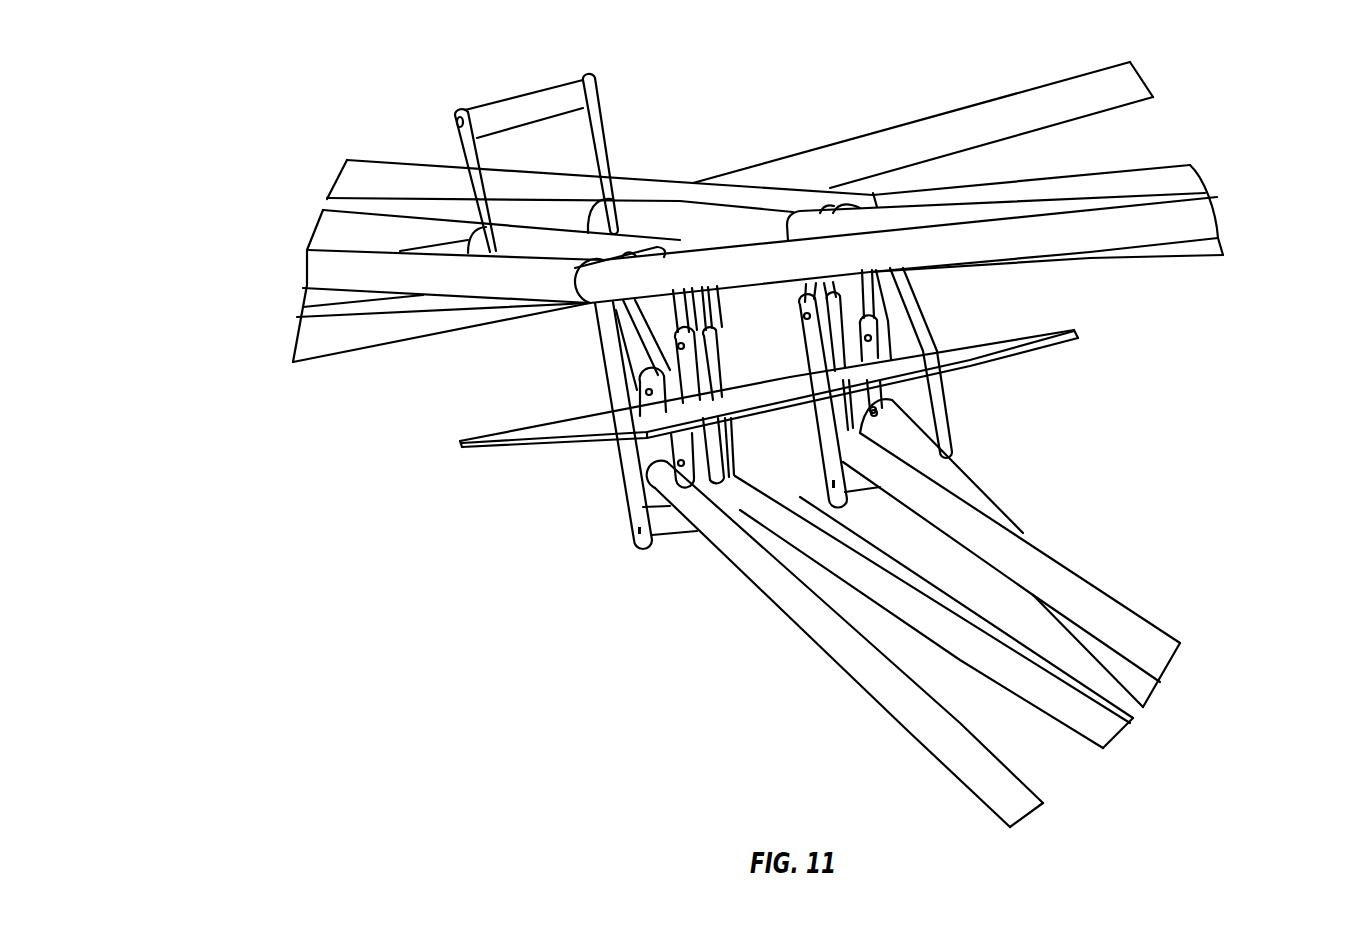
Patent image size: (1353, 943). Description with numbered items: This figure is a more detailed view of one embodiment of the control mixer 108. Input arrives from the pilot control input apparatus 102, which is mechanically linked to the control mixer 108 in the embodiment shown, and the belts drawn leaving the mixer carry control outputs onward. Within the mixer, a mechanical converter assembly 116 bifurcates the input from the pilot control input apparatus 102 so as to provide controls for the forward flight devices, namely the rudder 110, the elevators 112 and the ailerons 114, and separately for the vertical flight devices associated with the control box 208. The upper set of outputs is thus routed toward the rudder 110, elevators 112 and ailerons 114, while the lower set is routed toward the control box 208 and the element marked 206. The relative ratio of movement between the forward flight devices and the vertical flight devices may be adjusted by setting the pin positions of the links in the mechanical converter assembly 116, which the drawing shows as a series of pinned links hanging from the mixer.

The pilot control input apparatus 102 is at (283, 249).
The control mixer 108 is at (617, 120).
The rudder 110 is at (1225, 268).
The elevators 112 is at (962, 208).
The ailerons 114 is at (949, 239).
The mechanical converter assembly 116 is at (571, 476).
The lower downstream belt 206 is at (1200, 640).
The control box 208 is at (925, 644).